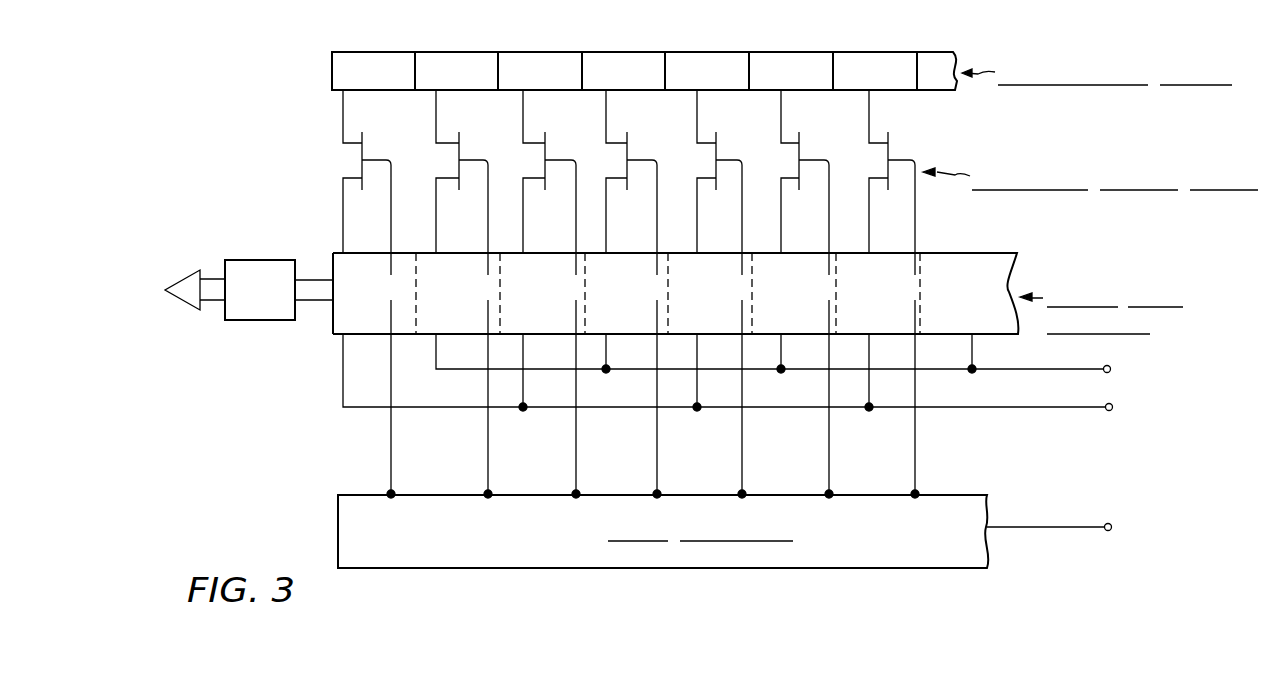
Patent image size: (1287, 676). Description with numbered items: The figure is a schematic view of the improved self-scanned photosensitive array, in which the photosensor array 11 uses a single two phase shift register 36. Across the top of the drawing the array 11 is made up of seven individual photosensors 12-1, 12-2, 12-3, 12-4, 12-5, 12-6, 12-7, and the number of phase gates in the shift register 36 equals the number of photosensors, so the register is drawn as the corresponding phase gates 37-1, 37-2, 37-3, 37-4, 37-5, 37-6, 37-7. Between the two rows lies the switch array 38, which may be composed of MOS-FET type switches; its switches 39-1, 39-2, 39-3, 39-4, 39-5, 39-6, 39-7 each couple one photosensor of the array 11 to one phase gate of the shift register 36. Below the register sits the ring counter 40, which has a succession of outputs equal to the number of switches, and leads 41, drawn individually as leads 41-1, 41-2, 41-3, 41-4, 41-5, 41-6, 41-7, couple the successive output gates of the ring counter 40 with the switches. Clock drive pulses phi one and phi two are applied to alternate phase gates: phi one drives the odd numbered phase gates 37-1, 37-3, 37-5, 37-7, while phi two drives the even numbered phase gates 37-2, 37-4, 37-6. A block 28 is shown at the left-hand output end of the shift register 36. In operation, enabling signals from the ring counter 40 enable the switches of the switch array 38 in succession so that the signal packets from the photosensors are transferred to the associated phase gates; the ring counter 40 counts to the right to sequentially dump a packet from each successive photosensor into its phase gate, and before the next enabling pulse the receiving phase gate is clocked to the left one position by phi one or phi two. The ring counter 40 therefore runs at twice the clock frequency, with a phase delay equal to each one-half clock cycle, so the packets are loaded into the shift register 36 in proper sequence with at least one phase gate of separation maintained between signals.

The photosensor array 11 is at (782, 45).
The photosensor 12-1 is at (373, 71).
The photosensor 12-2 is at (456, 71).
The photosensor 12-3 is at (540, 71).
The photosensor 12-4 is at (623, 71).
The photosensor 12-5 is at (707, 71).
The photosensor 12-6 is at (791, 71).
The photosensor 12-7 is at (875, 71).
The output amplifier / output circuit 28 is at (268, 260).
The two phase shift register 36 is at (758, 318).
The phase gate 37-1 is at (374, 293).
The phase gate 37-2 is at (458, 293).
The phase gate 37-3 is at (542, 293).
The phase gate 37-4 is at (626, 293).
The phase gate 37-5 is at (710, 293).
The phase gate 37-6 is at (794, 293).
The phase gate 37-7 is at (878, 293).
The switch array 38 is at (801, 171).
The switch 39-1 is at (362, 150).
The switch 39-2 is at (459, 150).
The switch 39-3 is at (545, 150).
The switch 39-4 is at (627, 150).
The switch 39-5 is at (716, 150).
The switch 39-6 is at (799, 150).
The switch 39-7 is at (888, 150).
The ring counter 40 is at (678, 552).
The leads 41 is at (640, 375).
The lead 41-1 is at (391, 494).
The lead 41-2 is at (488, 494).
The lead 41-3 is at (576, 494).
The lead 41-4 is at (657, 494).
The lead 41-5 is at (742, 494).
The lead 41-6 is at (829, 494).
The lead 41-7 is at (915, 494).